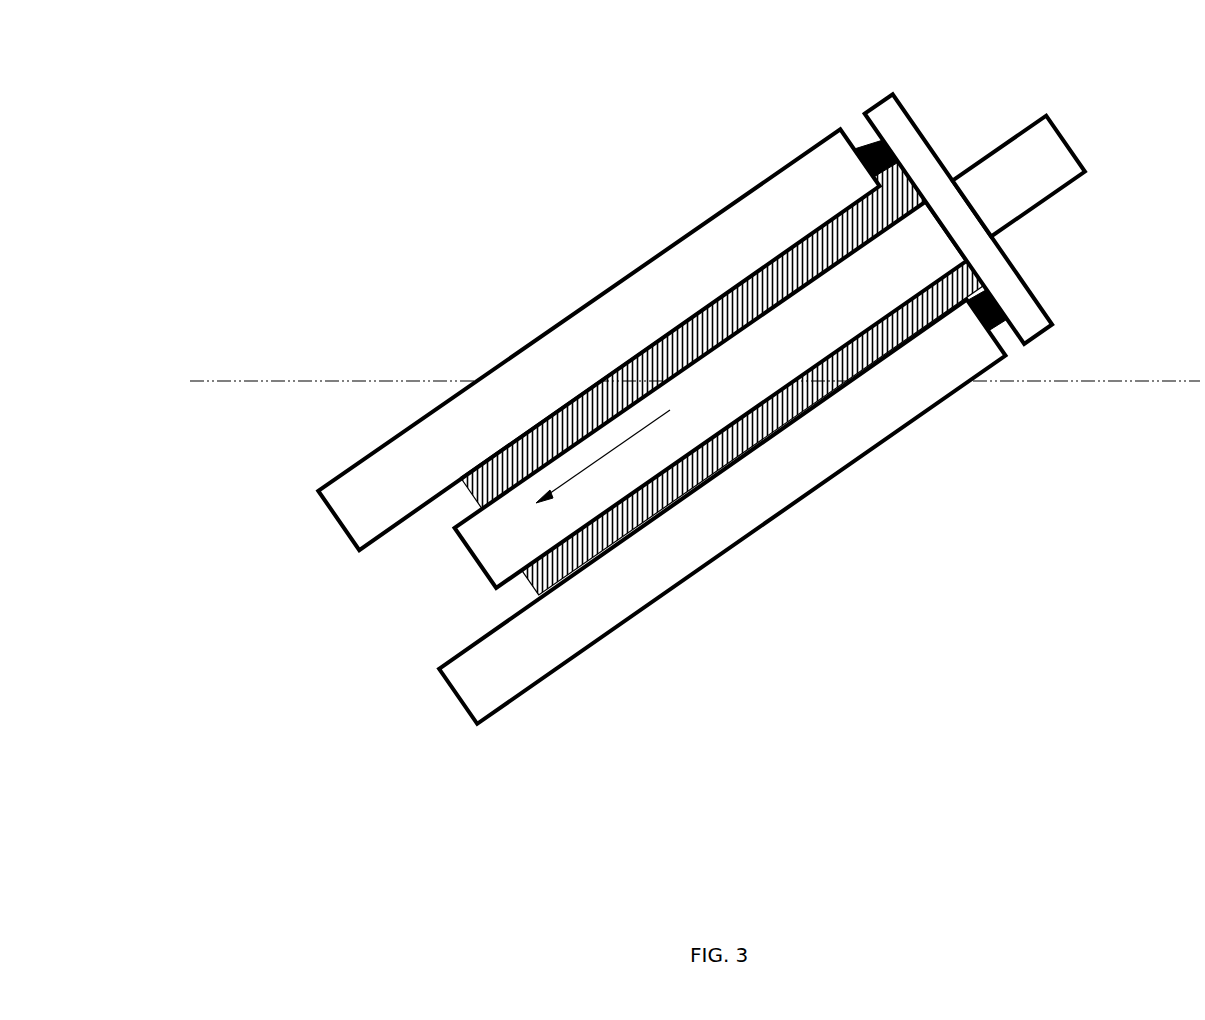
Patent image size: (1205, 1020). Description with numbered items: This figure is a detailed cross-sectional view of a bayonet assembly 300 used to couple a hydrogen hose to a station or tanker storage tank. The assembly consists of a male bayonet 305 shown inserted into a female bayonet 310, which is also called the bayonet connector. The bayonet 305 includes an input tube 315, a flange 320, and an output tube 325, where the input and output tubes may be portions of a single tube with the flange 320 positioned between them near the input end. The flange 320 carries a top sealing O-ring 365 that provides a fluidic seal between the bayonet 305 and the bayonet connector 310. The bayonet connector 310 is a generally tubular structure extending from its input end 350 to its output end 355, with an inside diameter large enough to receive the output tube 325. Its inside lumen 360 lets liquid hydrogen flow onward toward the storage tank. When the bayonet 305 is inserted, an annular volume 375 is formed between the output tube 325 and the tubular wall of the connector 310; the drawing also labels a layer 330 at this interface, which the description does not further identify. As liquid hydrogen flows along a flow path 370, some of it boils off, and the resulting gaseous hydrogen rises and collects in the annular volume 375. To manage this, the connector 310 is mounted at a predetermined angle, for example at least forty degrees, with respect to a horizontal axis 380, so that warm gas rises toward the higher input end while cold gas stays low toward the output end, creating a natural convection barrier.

The bayonet assembly 300 is at (452, 82).
The male bayonet 305 is at (1032, 292).
The female bayonet 310 is at (800, 152).
The input tube 315 is at (1070, 140).
The flange 320 is at (906, 112).
The output tube 325 is at (728, 305).
The second electrode plate 330 is at (822, 305).
The input end 350 is at (1000, 357).
The output end 355 is at (457, 703).
The inside lumen 360 is at (457, 627).
The top sealing O-ring 365 is at (862, 136).
The flow path 370 is at (655, 428).
The annular volume 375 is at (618, 545).
The horizontal axis 380 is at (325, 380).